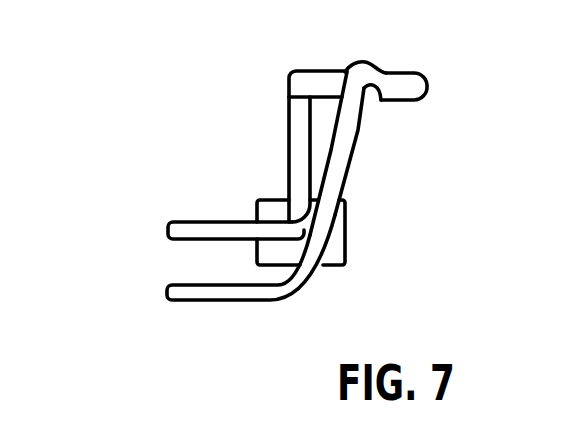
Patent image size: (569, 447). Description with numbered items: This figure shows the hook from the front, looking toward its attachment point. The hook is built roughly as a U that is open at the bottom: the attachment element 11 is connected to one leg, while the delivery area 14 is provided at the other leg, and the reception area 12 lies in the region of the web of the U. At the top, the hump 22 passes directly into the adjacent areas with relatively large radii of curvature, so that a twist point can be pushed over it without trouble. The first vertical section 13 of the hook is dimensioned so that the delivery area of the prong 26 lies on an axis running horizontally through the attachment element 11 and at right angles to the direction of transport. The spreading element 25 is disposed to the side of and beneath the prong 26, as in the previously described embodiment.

The attachment element 11 is at (337, 252).
The reception area 12 is at (447, 84).
The first vertical section 13 is at (302, 122).
The delivery area 14 is at (193, 263).
The hump 22 is at (368, 78).
The spreading element 25 is at (222, 292).
The prong 26 is at (193, 230).